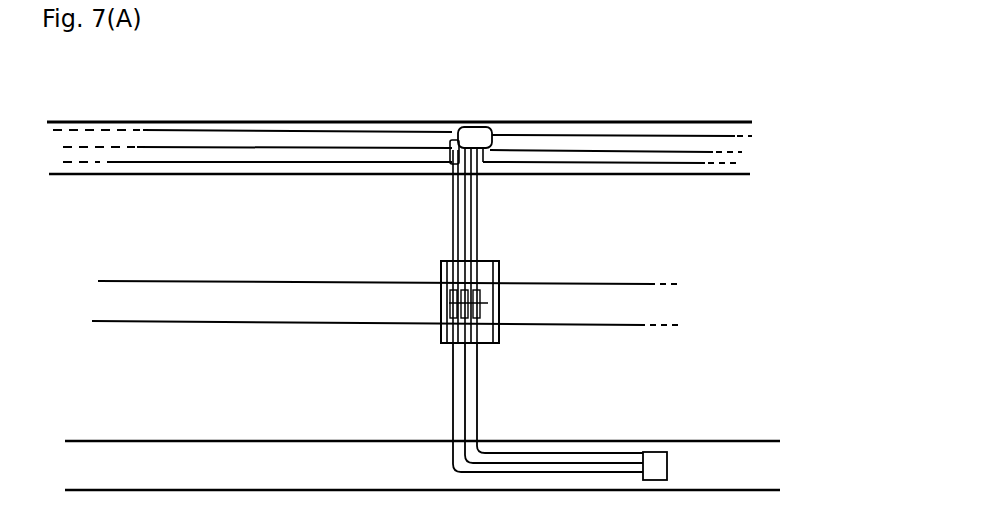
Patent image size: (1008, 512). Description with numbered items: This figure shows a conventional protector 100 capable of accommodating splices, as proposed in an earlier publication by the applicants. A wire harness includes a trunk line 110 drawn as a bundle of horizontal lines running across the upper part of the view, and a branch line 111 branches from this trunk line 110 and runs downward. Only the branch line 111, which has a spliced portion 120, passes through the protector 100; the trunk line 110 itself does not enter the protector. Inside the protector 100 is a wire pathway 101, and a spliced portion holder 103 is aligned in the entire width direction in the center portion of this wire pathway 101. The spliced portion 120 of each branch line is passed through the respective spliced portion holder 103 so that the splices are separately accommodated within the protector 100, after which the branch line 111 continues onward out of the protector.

The trunk line 110 is at (638, 152).
The branch line 111 is at (481, 198).
The protector 100 is at (489, 313).
The wire pathway 101 is at (447, 343).
The spliced portion holder 103 is at (497, 328).
The spliced portion 120 is at (452, 296).